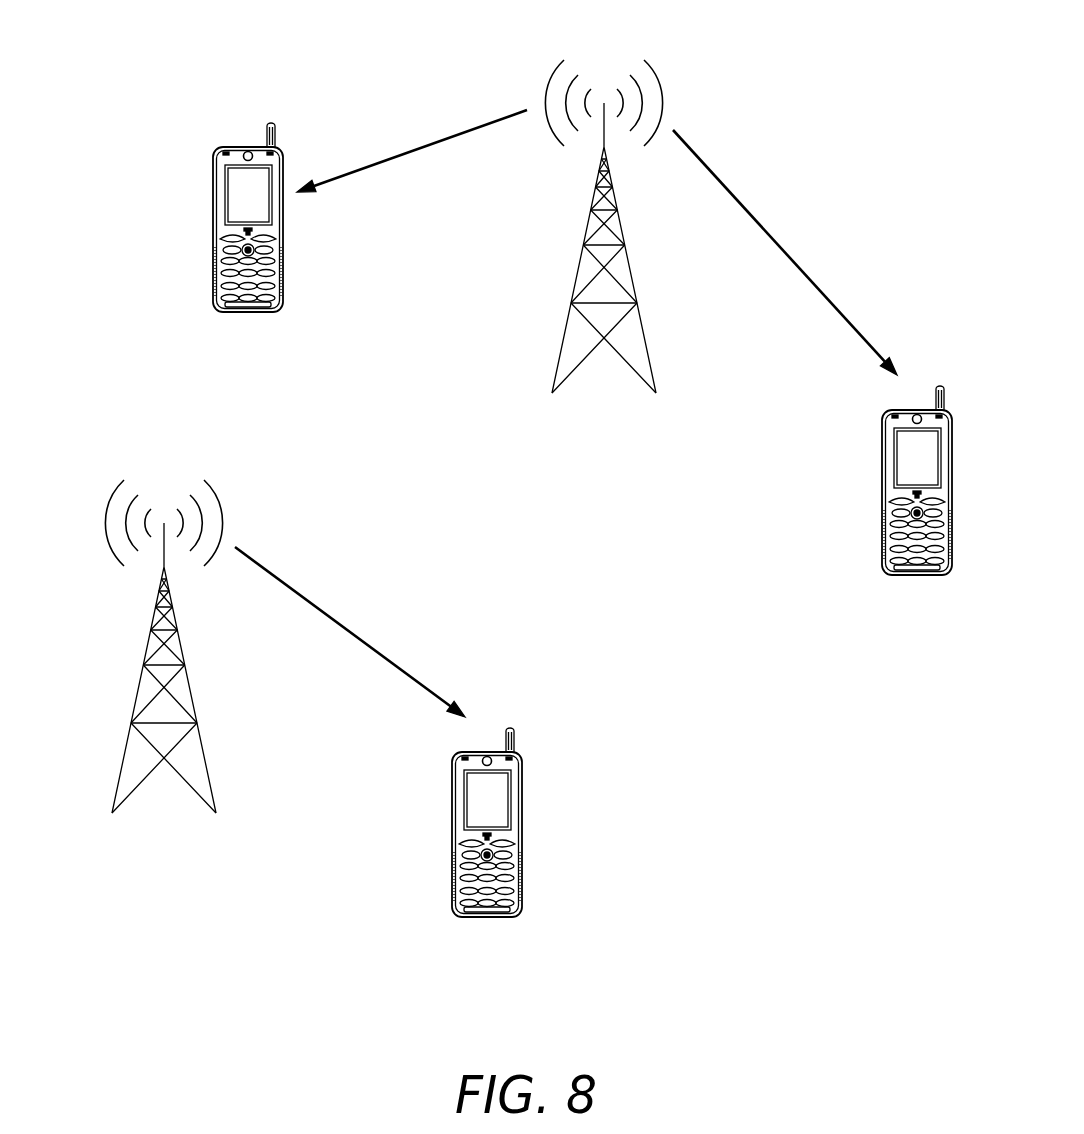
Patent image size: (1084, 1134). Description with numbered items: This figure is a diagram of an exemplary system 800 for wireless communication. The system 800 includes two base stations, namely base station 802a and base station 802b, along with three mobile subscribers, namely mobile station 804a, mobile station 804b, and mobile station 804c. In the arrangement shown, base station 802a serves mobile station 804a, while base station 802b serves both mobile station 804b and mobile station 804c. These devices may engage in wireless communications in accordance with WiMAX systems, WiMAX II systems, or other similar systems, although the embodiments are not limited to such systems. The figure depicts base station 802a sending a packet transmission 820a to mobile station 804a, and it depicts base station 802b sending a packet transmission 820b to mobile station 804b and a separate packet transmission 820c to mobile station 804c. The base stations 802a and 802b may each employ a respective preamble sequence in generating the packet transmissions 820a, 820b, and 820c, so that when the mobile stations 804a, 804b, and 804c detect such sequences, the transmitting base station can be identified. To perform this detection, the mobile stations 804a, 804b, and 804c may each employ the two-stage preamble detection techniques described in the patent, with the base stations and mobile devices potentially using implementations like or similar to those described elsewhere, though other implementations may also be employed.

The system 800 is at (914, 27).
The base station 802a is at (138, 685).
The base station 802b is at (578, 265).
The mobile station 804a is at (523, 807).
The mobile station 804b is at (882, 468).
The mobile station 804c is at (213, 193).
The packet transmission 820a is at (348, 630).
The packet transmission 820b is at (785, 250).
The packet transmission 820c is at (412, 148).